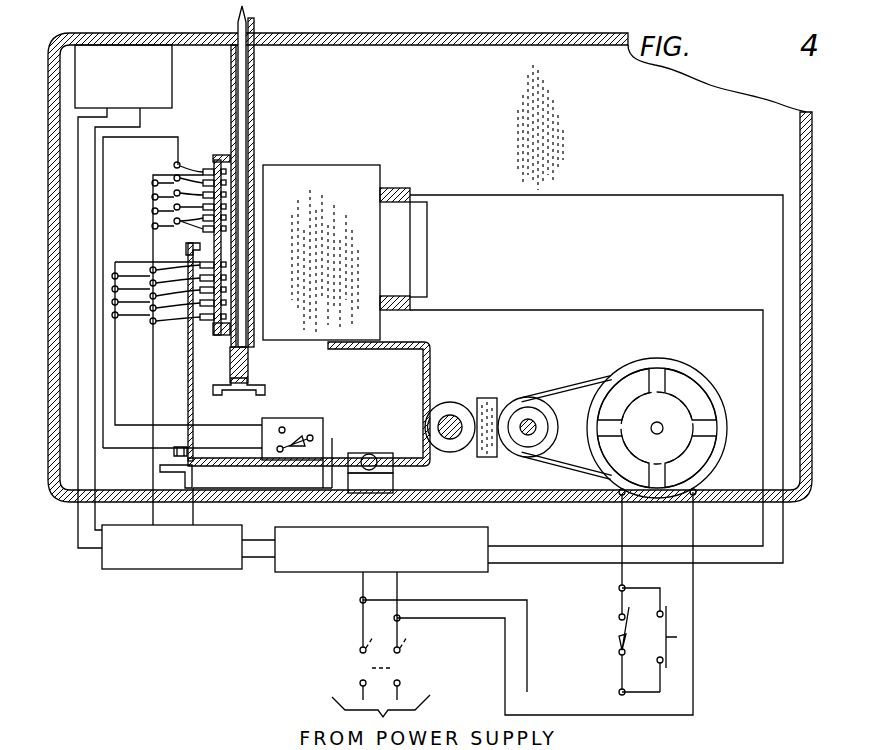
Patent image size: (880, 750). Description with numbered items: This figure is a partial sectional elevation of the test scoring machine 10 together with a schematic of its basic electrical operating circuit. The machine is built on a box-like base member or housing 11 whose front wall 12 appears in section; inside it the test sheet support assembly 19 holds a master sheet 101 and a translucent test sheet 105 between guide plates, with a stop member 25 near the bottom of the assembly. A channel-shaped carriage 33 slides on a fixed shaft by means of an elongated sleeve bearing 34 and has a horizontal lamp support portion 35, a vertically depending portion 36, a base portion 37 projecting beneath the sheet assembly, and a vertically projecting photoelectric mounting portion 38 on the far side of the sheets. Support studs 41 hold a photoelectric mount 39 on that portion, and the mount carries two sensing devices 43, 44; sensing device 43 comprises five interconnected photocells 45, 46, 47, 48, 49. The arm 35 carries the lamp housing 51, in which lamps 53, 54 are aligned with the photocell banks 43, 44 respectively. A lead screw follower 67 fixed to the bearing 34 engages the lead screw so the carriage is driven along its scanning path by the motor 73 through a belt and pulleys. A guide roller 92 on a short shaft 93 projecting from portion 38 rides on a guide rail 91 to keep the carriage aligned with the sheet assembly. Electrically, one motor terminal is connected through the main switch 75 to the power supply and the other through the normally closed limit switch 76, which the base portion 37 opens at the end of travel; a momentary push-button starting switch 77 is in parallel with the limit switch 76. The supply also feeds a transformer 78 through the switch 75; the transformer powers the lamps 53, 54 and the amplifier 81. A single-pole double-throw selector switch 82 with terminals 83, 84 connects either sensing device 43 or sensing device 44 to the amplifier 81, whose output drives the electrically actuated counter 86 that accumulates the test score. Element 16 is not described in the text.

The test scoring machine 10 is at (782, 90).
The base member or housing 11 is at (399, 498).
The front wall 12 is at (52, 205).
The clamp 16 is at (377, 455).
The test sheet support assembly 19 is at (262, 138).
The stop member 25 is at (249, 364).
The carriage 33 is at (441, 346).
The sleeve bearing 34 is at (450, 403).
The lamp support portion 35 is at (396, 350).
The vertically depending portion 36 is at (424, 390).
The base portion 37 is at (343, 457).
The photoelectric mounting portion 38 is at (188, 381).
The photoelectric mount 39 is at (229, 352).
The support studs 41 is at (193, 243).
The sensing device 43 is at (193, 160).
The sensing device 44 is at (196, 318).
The photocell 45 is at (206, 168).
The photocell 46 is at (203, 181).
The photocell 47 is at (152, 184).
The photocell 48 is at (152, 211).
The photocell 49 is at (152, 227).
The lamp housing 51 is at (357, 173).
The lamp 53 is at (412, 190).
The lamp 54 is at (394, 294).
The lead screw follower 67 is at (496, 403).
The motor 73 is at (680, 400).
The main switch 75 is at (358, 666).
The limit switch 76 is at (617, 628).
The starting switch 77 is at (666, 614).
The transformer 78 is at (332, 574).
The amplifier 81 is at (190, 571).
The selector switch 82 is at (308, 420).
The terminal 83 is at (282, 427).
The terminal 84 is at (281, 453).
The counter 86 is at (128, 52).
The guide rail 91 is at (185, 472).
The guide roller 92 is at (182, 449).
The shaft 93 is at (196, 450).
The master sheet 101 is at (256, 28).
The test sheet 105 is at (237, 24).